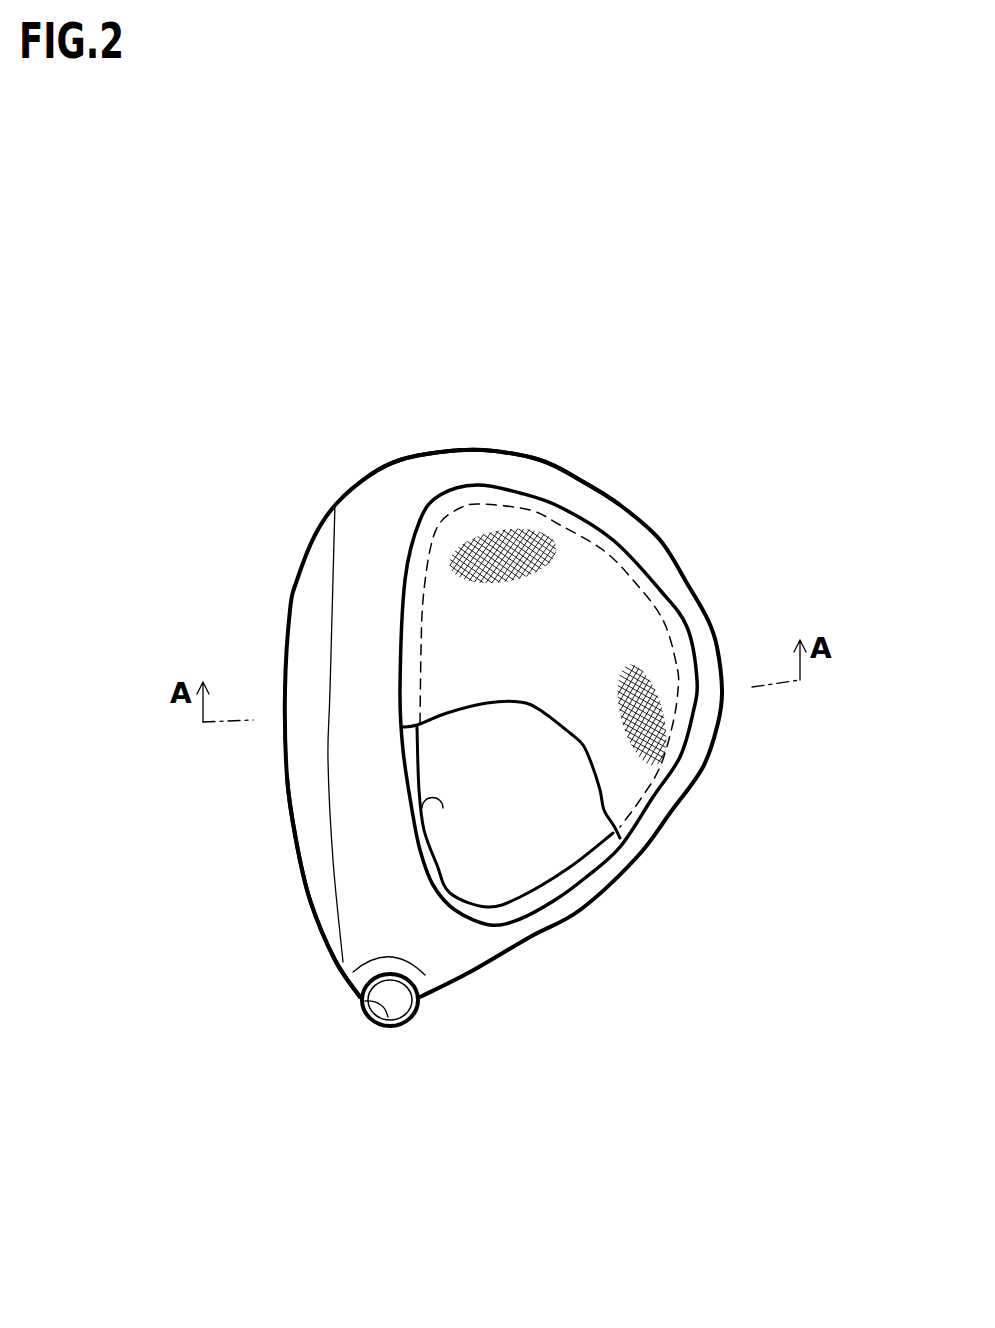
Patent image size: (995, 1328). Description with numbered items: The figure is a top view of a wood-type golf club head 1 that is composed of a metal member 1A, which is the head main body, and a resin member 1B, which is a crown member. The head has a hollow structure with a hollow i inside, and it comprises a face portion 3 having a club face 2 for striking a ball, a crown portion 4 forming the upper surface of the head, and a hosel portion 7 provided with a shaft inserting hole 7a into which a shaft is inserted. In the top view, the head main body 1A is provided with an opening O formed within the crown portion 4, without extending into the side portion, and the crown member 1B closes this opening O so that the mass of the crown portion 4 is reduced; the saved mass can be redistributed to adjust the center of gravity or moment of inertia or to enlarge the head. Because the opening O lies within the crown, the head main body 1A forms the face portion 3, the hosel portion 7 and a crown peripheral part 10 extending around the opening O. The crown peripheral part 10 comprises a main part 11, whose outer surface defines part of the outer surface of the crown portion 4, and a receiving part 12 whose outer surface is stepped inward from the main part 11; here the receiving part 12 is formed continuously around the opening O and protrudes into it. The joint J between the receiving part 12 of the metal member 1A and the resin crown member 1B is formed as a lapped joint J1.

The golf club head 1 is at (613, 660).
The metal member (head main body) 1A is at (660, 540).
The resin member (crown member) 1B is at (640, 620).
The club face 2 is at (300, 582).
The face portion 3 is at (300, 787).
The crown portion 4 is at (405, 480).
The hosel portion 7 is at (372, 1053).
The shaft inserting hole 7a is at (387, 1017).
The crown peripheral part 10 is at (580, 795).
The main part 11 is at (547, 918).
The receiving part 12 is at (603, 850).
The hollow i is at (514, 806).
The opening O is at (440, 811).
The joint J is at (766, 699).
The lapped joint J1 is at (660, 777).